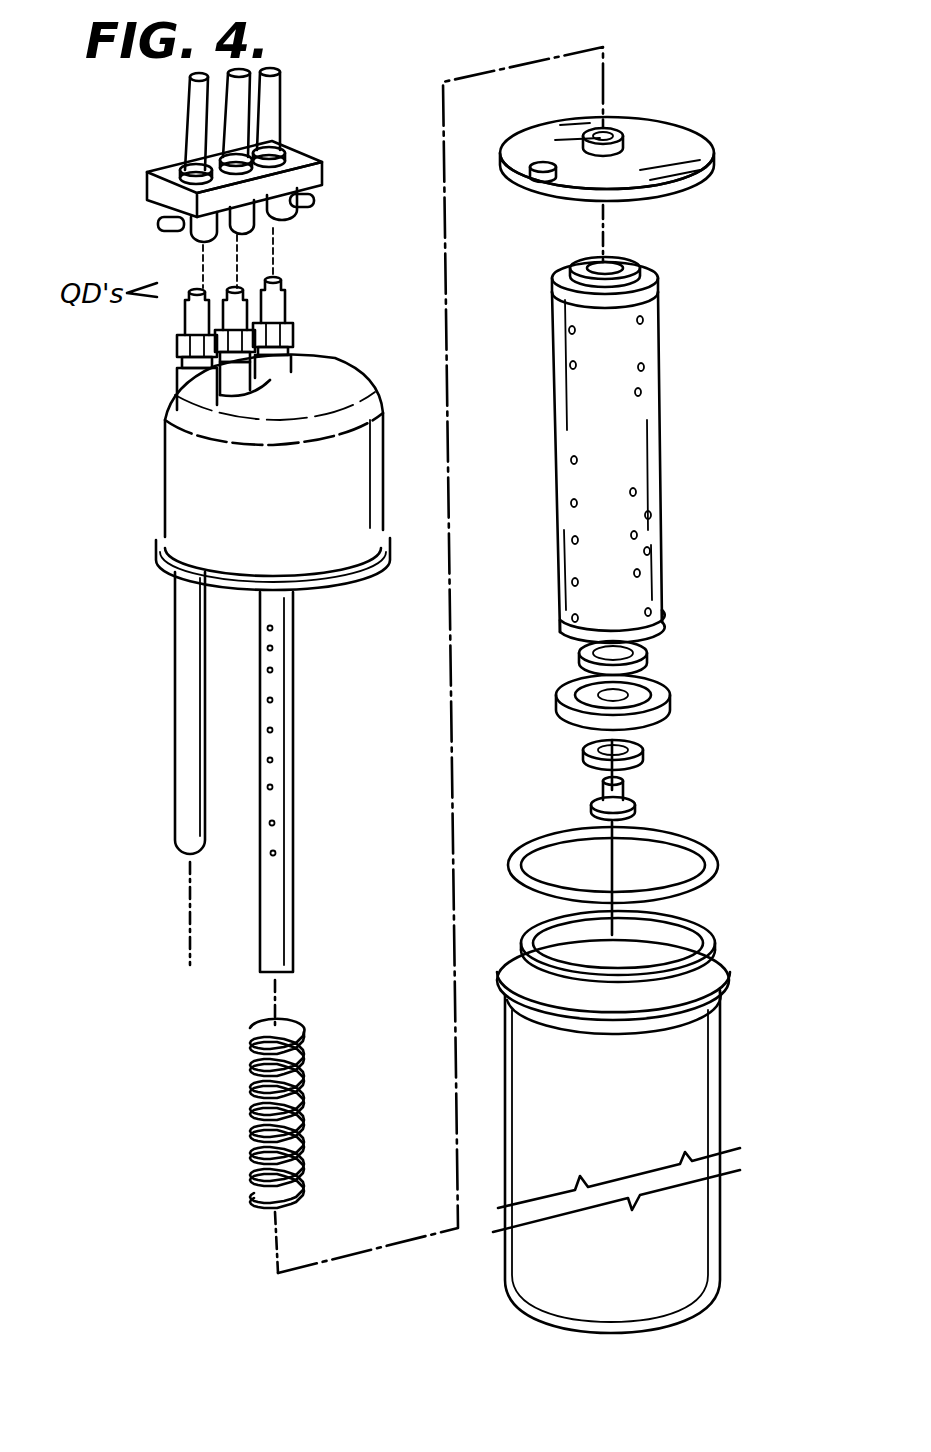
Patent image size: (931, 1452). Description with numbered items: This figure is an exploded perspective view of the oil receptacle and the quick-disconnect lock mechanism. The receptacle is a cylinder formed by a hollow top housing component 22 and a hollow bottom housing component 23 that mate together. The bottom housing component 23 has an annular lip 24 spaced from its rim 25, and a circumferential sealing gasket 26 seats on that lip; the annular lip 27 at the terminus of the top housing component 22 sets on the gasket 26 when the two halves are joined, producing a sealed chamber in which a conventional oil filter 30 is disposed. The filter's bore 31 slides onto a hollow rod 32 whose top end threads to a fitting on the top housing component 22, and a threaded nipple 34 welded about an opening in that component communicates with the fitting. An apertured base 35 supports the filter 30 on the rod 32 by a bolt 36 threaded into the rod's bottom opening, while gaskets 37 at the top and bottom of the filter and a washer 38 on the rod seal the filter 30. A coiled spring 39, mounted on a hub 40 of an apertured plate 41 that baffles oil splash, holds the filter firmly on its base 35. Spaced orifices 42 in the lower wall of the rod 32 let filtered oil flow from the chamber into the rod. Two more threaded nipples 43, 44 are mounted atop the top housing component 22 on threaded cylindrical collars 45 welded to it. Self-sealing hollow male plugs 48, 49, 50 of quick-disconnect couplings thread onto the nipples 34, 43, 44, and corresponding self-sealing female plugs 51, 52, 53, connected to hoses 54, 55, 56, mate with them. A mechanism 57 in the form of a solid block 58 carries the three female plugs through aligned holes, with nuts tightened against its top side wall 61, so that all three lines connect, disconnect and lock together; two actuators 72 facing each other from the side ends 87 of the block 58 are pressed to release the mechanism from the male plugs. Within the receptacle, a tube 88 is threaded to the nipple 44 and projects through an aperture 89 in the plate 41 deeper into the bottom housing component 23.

The top housing component 22 is at (178, 493).
The bottom housing component 23 is at (670, 1088).
The annular lip 24 is at (687, 1007).
The rim 25 is at (527, 942).
The sealing gasket 26 is at (720, 860).
The annular lip 27 is at (197, 573).
The oil filter 30 is at (632, 408).
The bore 31 is at (613, 270).
The hollow rod 32 is at (293, 715).
The threaded nipple 34 is at (295, 335).
The apertured base 35 is at (670, 692).
The bolt 36 is at (643, 800).
The gaskets 37 is at (653, 270).
The washer 38 is at (643, 747).
The coiled spring 39 is at (302, 1032).
The hub 40 is at (627, 140).
The apertured plate 41 is at (693, 153).
The orifices 42 is at (274, 670).
The threaded nipple 43 is at (250, 392).
The threaded nipple 44 is at (182, 363).
The threaded cylindrical collars 45 is at (368, 360).
The male plug 48 is at (300, 290).
The male plug 49 is at (253, 278).
The male plug 50 is at (185, 320).
The female plug 51 is at (277, 218).
The female plug 52 is at (240, 228).
The female plug 53 is at (200, 247).
The hose 54 is at (270, 122).
The hose 55 is at (247, 102).
The hose 56 is at (187, 120).
The mechanism 57 is at (247, 170).
The block 58 is at (313, 173).
The top side wall 61 is at (170, 168).
The actuators 72 is at (160, 227).
The side ends 87 is at (147, 188).
The tube 88 is at (182, 727).
The aperture 89 is at (553, 197).